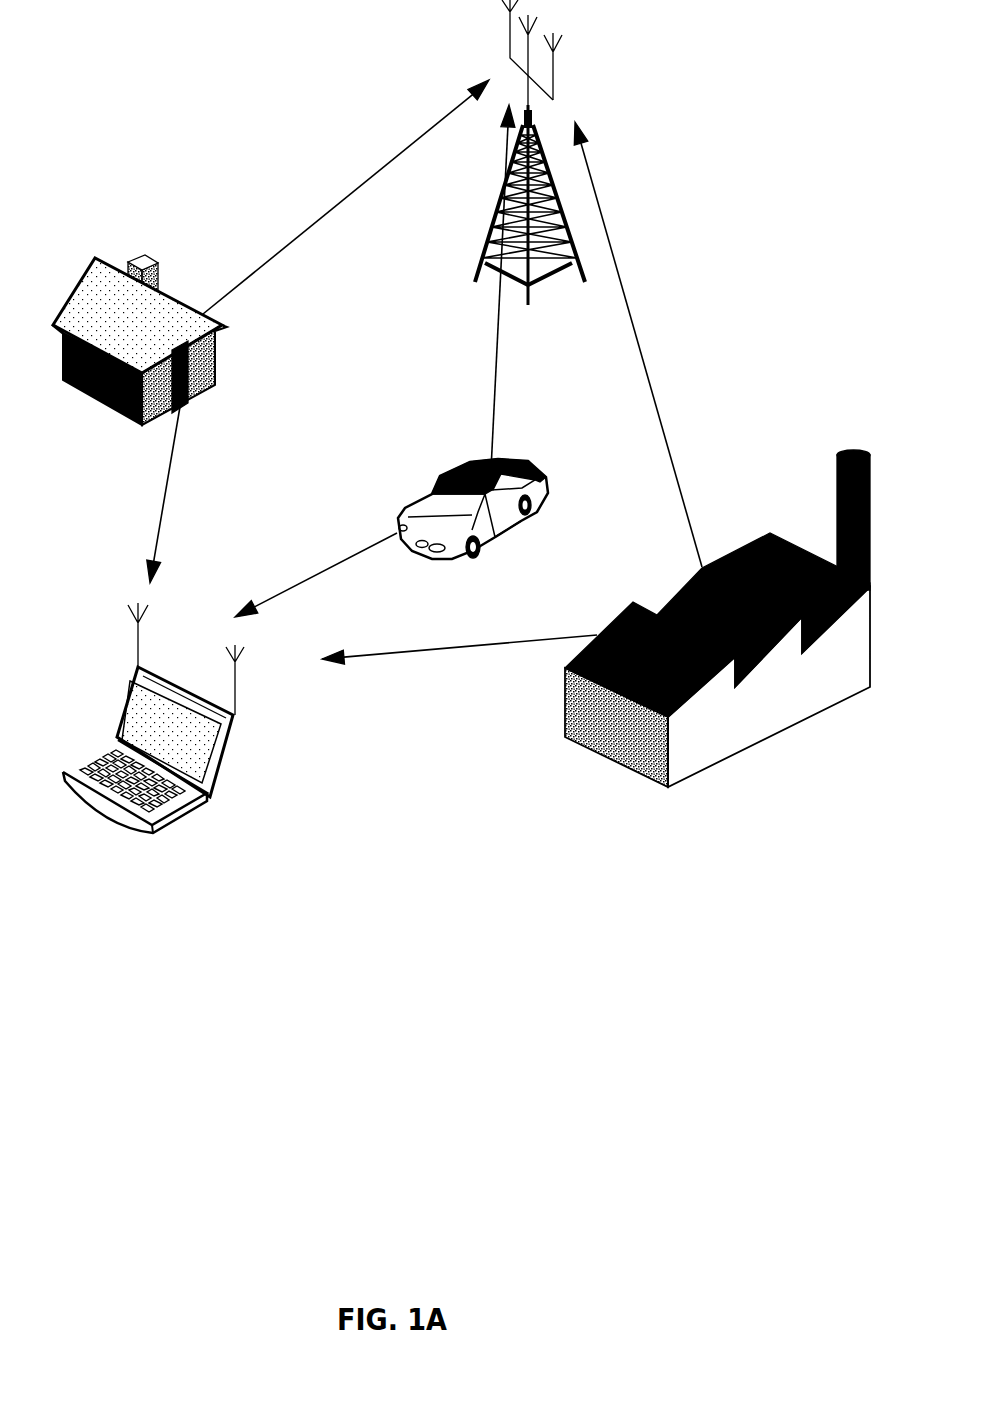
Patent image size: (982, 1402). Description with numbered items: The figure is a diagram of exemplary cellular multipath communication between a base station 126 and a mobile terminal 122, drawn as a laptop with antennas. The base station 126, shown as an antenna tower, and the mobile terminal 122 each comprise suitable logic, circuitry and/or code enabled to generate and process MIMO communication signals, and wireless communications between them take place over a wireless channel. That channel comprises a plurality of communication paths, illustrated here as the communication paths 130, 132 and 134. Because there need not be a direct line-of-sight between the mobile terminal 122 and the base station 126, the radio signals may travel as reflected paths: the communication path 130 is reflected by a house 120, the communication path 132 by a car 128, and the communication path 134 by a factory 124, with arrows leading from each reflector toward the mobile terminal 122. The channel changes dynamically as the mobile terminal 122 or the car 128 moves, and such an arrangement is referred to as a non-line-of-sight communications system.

The house 120 is at (95, 258).
The mobile terminal 122 is at (227, 740).
The factory 124 is at (687, 777).
The base station 126 is at (528, 305).
The car 128 is at (475, 558).
The communication path 130 is at (280, 251).
The communication path 132 is at (497, 410).
The communication path 134 is at (648, 380).